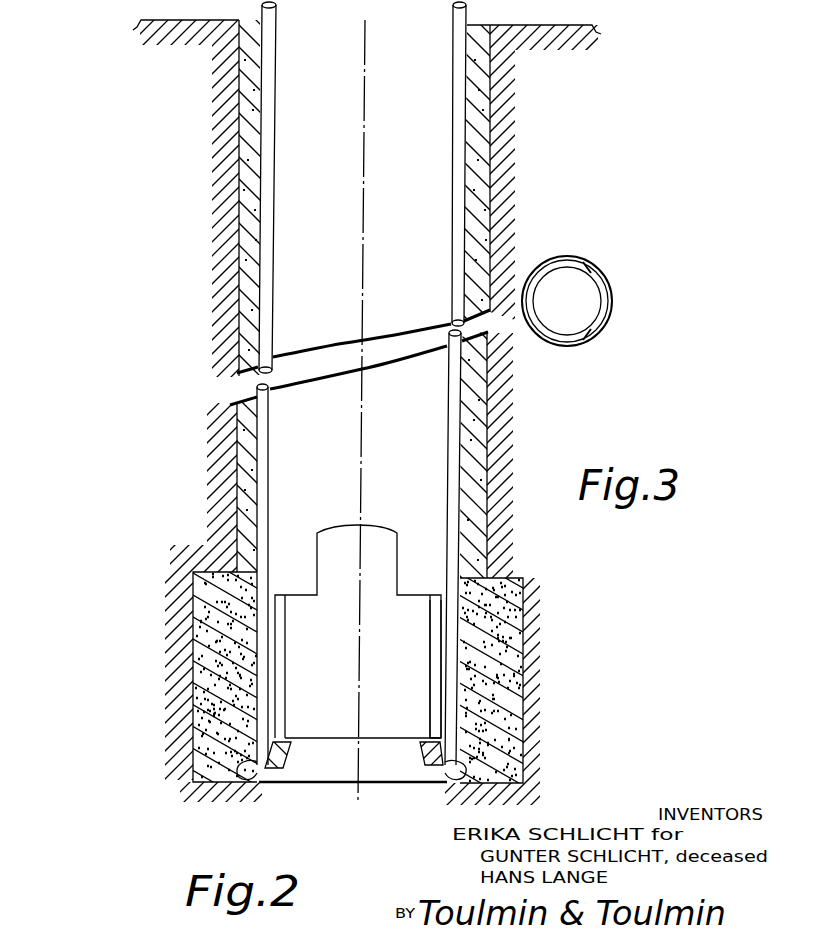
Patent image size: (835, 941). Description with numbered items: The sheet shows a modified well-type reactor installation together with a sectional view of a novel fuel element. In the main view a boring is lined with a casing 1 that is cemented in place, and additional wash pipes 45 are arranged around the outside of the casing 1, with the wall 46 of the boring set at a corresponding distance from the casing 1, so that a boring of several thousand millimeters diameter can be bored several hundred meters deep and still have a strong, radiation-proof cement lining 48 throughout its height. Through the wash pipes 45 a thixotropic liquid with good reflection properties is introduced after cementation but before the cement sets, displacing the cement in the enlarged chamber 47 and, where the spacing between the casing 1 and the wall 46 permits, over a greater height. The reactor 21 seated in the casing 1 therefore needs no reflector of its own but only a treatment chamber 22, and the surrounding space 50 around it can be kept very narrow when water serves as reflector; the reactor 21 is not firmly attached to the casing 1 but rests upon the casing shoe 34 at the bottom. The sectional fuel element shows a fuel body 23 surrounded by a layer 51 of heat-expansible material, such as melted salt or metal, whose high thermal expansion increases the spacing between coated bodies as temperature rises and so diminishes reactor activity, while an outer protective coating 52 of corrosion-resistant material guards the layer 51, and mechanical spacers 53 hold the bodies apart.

In FIG. 2, the casing 1 is at (275, 88).
In FIG. 2, the wash pipes 45 is at (270, 127).
In FIG. 2, the wall of the boring 46 is at (239, 166).
In FIG. 2, the cement lining 48 is at (470, 534).
In FIG. 2, the enlarged chamber 47 is at (483, 607).
In FIG. 2, the surrounding space 50 is at (446, 660).
In FIG. 2, the treatment chamber 22 is at (433, 711).
In FIG. 2, the reactor 21 is at (327, 656).
In FIG. 2, the casing shoe 34 is at (325, 785).
In FIG. 3, the protective coating 52 is at (590, 255).
In FIG. 3, the layer of heat-expansible material 51 is at (705, 245).
In FIG. 3, the fuel body 23 is at (565, 320).
In FIG. 3, the mechanical spacers 53 is at (588, 340).